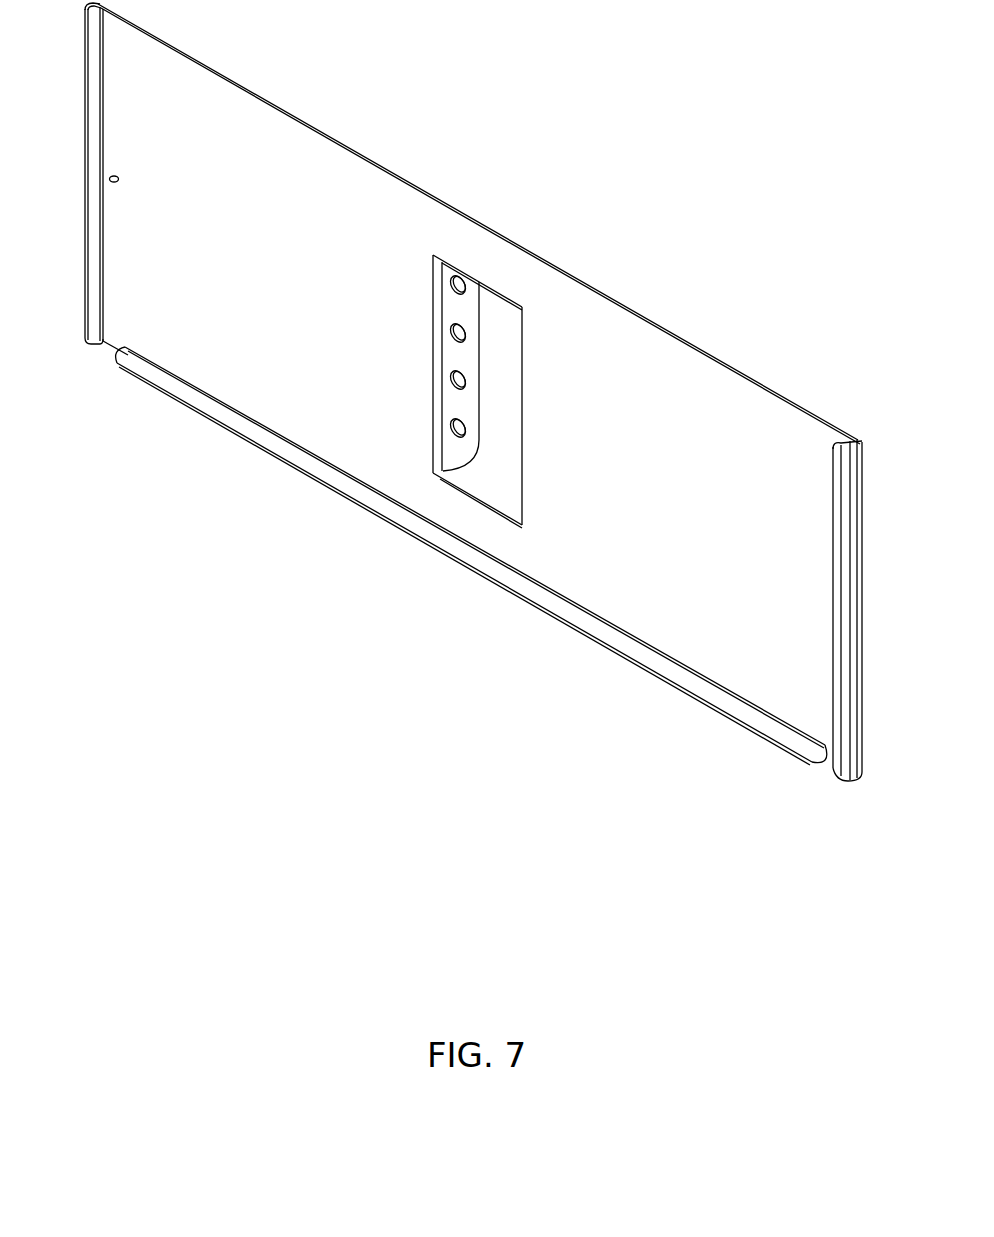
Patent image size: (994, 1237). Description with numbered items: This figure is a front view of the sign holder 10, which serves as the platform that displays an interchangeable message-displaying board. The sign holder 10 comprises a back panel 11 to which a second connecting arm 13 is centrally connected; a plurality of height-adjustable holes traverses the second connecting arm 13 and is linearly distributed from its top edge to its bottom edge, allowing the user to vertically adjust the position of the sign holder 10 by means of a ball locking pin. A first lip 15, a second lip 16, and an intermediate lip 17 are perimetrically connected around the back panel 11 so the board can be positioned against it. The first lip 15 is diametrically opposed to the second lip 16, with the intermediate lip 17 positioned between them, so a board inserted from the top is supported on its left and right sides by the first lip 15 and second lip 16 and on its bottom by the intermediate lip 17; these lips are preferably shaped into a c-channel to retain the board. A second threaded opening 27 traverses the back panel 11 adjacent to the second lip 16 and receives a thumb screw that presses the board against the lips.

The sign holder 10 is at (378, 108).
The back panel 11 is at (648, 458).
The second connecting arm 13 is at (487, 333).
The first lip 15 is at (855, 745).
The second lip 16 is at (90, 311).
The intermediate lip 17 is at (302, 470).
The second threaded opening 27 is at (106, 182).